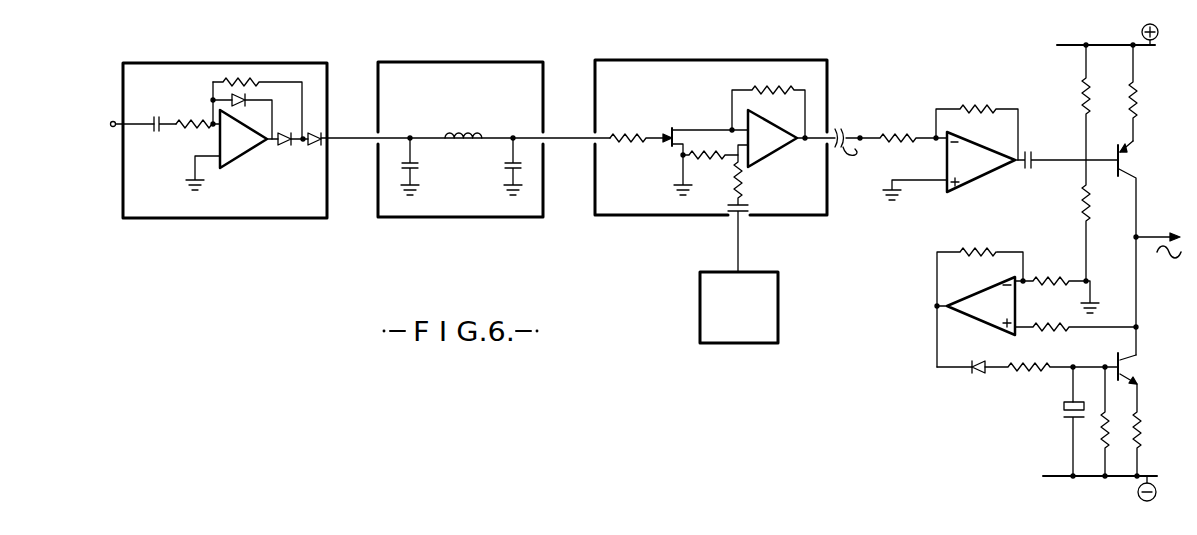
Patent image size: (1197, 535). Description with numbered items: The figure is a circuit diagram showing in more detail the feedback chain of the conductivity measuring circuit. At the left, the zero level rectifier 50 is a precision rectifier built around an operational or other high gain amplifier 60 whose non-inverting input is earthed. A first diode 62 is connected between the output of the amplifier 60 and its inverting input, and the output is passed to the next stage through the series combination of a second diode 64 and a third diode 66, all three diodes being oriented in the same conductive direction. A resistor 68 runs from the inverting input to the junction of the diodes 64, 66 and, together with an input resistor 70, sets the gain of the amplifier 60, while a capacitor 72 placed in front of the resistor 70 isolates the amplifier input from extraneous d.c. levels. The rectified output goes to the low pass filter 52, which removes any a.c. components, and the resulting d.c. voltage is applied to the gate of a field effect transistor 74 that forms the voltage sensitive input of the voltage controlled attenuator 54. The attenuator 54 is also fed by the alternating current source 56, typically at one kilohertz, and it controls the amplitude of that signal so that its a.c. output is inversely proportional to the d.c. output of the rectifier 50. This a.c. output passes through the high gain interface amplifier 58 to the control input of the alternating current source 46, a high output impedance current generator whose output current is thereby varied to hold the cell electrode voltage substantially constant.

The alternating current source 46 is at (1044, 382).
The zero level rectifier 50 is at (288, 219).
The low pass filter 52 is at (444, 218).
The voltage controlled attenuator 54 is at (628, 217).
The alternating current source 56 is at (752, 329).
The amplifier 58 is at (992, 173).
The amplifier 60 is at (235, 146).
The first diode 62 is at (245, 97).
The second diode 64 is at (288, 155).
The third diode 66 is at (308, 155).
The resistor 68 is at (247, 80).
The input resistor 70 is at (185, 121).
The capacitor 72 is at (164, 96).
The field effect transistor 74 is at (672, 143).